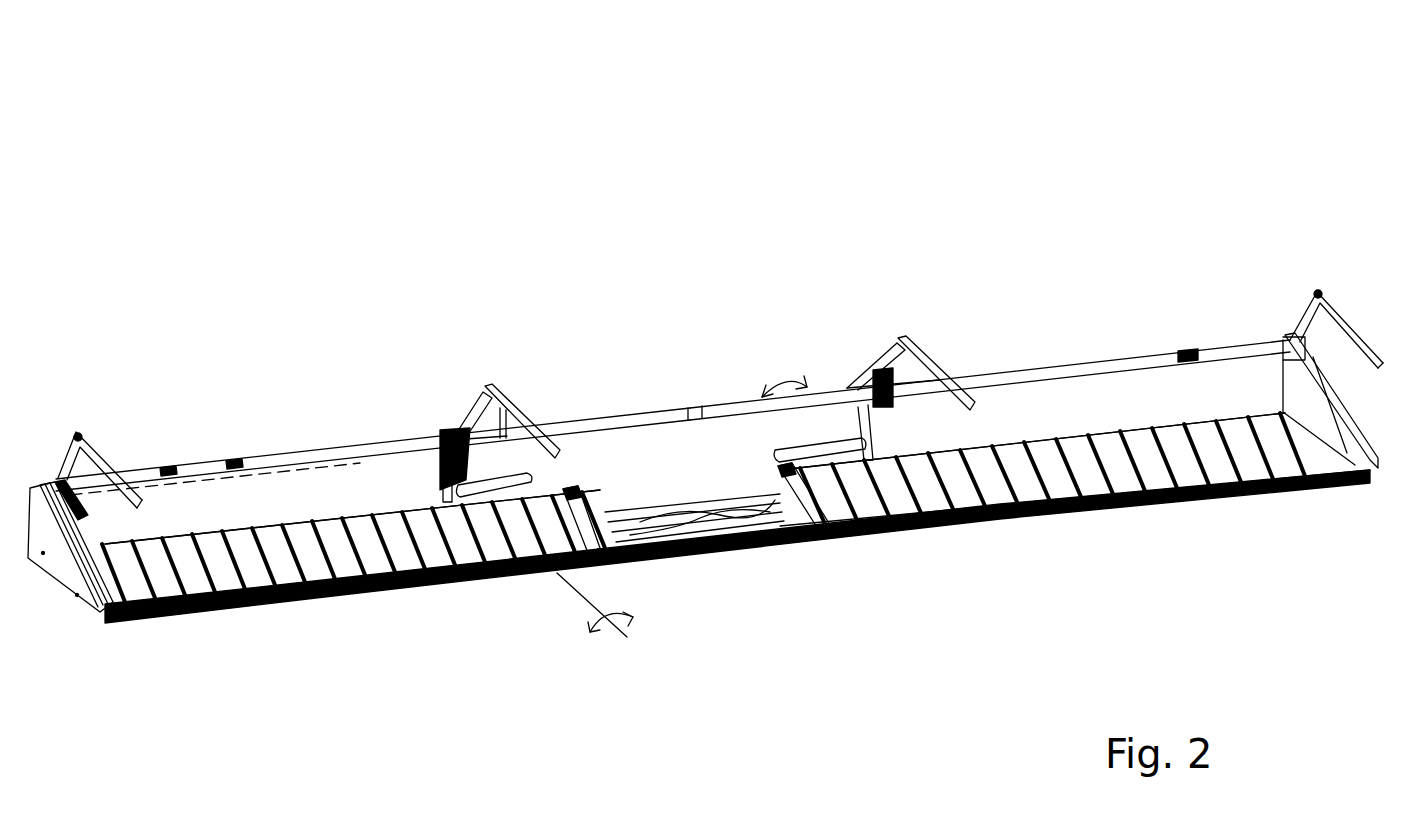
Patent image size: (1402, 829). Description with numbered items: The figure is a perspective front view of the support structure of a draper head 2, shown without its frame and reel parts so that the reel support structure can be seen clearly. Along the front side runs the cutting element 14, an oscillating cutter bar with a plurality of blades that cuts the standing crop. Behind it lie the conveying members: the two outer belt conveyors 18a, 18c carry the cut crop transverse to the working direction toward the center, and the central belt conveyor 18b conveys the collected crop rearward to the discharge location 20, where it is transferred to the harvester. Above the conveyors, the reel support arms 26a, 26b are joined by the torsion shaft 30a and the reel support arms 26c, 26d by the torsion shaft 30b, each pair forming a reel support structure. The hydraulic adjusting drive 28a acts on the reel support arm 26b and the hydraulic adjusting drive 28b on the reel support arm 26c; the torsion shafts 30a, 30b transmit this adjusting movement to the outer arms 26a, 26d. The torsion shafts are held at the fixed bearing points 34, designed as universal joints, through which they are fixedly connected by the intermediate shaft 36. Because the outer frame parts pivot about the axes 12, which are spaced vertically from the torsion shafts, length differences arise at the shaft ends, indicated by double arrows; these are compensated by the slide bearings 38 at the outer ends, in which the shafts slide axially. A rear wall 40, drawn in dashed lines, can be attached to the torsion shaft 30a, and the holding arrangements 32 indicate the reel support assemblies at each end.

The draper head 2 is at (588, 138).
The axes 12 is at (580, 593).
The cutting element 14 is at (947, 520).
The belt conveyor 18a is at (350, 600).
The belt conveyor 18b is at (733, 553).
The belt conveyor 18c is at (1093, 487).
The discharge location 20 is at (668, 478).
The reel support arm 26a is at (107, 463).
The reel support arm 26b is at (530, 427).
The reel support arm 26c is at (930, 372).
The reel support arm 26d is at (1358, 320).
The hydraulic adjusting drive 28a is at (440, 473).
The hydraulic adjusting drive 28b is at (887, 387).
The torsion shaft 30a is at (287, 457).
The torsion shaft 30b is at (1113, 363).
The holding arrangement 32 is at (186, 296).
The fixed bearing points 34 is at (466, 462).
The intermediate shaft 36 is at (697, 408).
The slide bearings 38 is at (58, 482).
The rear wall 40 is at (340, 483).